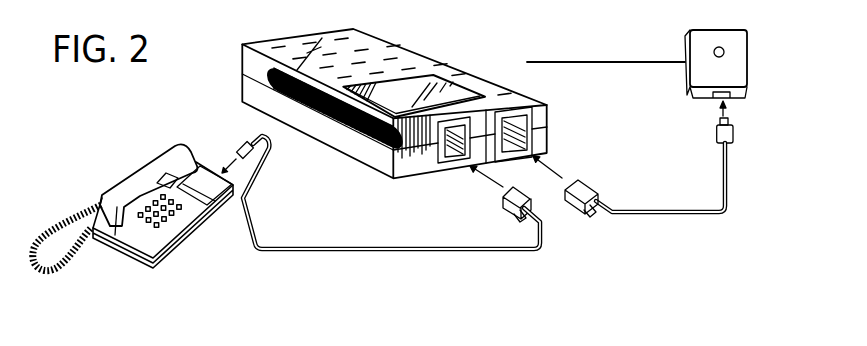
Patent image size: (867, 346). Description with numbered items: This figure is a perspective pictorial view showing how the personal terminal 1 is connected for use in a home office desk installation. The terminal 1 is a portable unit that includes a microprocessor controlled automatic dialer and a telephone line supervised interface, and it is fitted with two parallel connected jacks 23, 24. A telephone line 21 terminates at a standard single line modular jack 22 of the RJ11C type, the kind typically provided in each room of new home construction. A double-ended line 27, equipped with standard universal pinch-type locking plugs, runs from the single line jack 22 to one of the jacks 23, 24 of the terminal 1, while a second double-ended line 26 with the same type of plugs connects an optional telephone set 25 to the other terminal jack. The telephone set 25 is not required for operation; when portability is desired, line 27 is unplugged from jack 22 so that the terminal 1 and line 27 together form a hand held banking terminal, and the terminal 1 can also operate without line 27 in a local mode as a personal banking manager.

The personal terminal 1 is at (427, 59).
The telephone line 21 is at (588, 61).
The single line modular jack 22 is at (747, 58).
The jack 23 is at (548, 117).
The jack 24 is at (440, 142).
The telephone set 25 is at (194, 231).
The double-ended line 26 is at (388, 246).
The double-ended line 27 is at (643, 210).